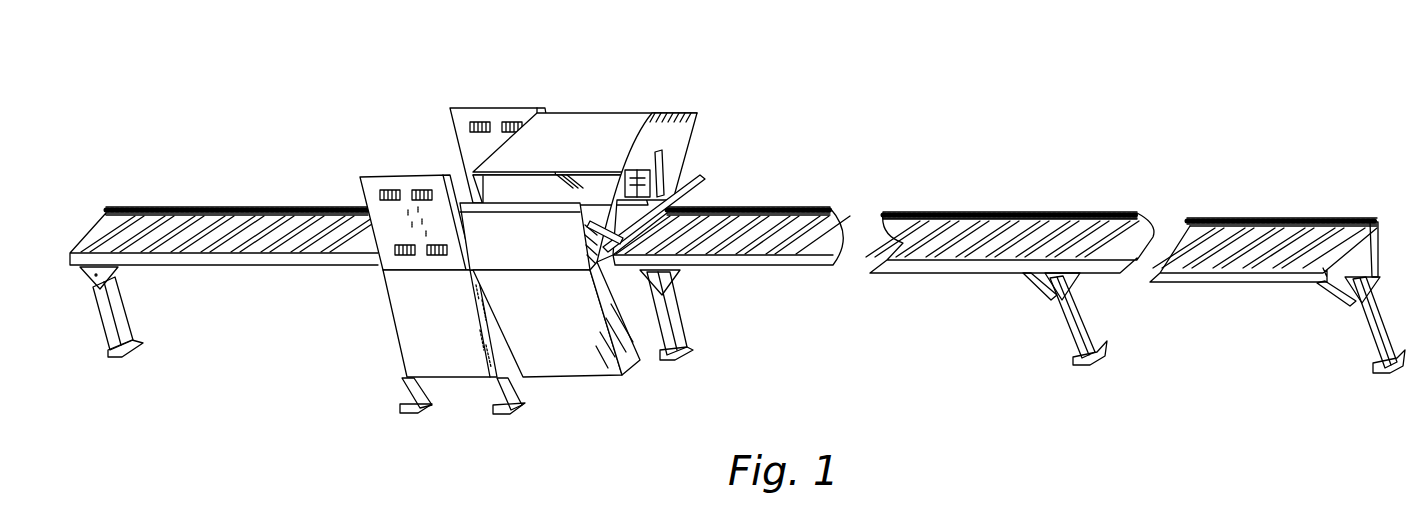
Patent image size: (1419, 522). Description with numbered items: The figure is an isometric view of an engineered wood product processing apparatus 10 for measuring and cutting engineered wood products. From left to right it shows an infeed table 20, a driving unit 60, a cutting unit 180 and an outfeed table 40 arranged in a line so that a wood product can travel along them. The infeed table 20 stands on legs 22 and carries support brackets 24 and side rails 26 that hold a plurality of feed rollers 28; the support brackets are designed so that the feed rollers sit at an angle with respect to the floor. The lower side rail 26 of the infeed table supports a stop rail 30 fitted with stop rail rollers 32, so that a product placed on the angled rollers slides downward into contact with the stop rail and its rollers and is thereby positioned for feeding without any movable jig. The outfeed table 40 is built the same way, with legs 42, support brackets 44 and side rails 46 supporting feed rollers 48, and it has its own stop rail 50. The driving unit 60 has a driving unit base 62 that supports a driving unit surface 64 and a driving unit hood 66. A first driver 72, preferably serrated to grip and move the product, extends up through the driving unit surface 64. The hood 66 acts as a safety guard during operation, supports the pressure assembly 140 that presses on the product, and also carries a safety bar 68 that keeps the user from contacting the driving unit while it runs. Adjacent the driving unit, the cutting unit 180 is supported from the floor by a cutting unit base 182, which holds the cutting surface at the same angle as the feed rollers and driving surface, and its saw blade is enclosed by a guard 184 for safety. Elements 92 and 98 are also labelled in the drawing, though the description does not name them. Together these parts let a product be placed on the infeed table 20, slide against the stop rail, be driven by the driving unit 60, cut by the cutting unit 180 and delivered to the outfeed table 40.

The engineered wood product processing apparatus 10 is at (868, 66).
The infeed table 20 is at (1010, 204).
The legs 22 is at (682, 336).
The support brackets 24 is at (1052, 287).
The side rails 26 is at (1378, 236).
The feed rollers 28 is at (1122, 237).
The stop rail 30 is at (1376, 222).
The stop rail rollers 32 is at (932, 214).
The outfeed table 40 is at (227, 243).
The legs 42 is at (125, 323).
The support brackets 44 is at (110, 278).
The side rails 46 is at (110, 216).
The feed rollers 48 is at (112, 206).
The stop rail 50 is at (188, 212).
The driving unit 60 is at (664, 205).
The driving unit base 62 is at (577, 341).
The driving unit surface 64 is at (668, 185).
The driving unit hood 66 is at (571, 161).
The safety bar 68 is at (703, 178).
The first driver 72 is at (624, 223).
The discharge conveyor 92 is at (1274, 238).
The transfer conveyor 98 is at (797, 212).
The pressure assembly 140 is at (674, 168).
The cutting unit 180 is at (453, 213).
The cutting unit base 182 is at (456, 323).
The guard 184 is at (497, 117).